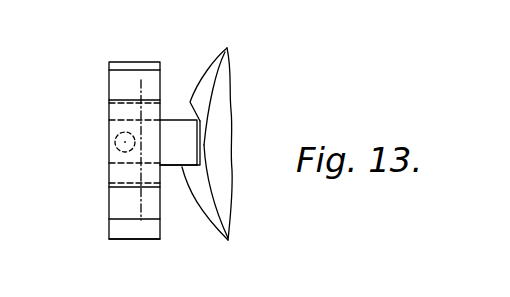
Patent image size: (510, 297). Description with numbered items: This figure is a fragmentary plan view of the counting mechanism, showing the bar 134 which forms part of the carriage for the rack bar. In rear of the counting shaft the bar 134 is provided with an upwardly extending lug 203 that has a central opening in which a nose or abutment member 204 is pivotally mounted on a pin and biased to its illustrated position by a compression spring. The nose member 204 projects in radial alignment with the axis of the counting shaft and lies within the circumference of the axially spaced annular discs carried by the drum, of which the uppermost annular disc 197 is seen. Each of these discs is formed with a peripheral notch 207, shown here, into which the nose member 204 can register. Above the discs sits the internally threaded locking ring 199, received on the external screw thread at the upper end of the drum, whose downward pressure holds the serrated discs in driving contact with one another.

The upwardly extending lug 203 is at (110, 91).
The bar 134 is at (110, 229).
The nose or abutment member 204 is at (172, 130).
The peripheral notch 207 is at (197, 148).
The locking ring 199 is at (221, 92).
The annular disc 197 is at (213, 221).